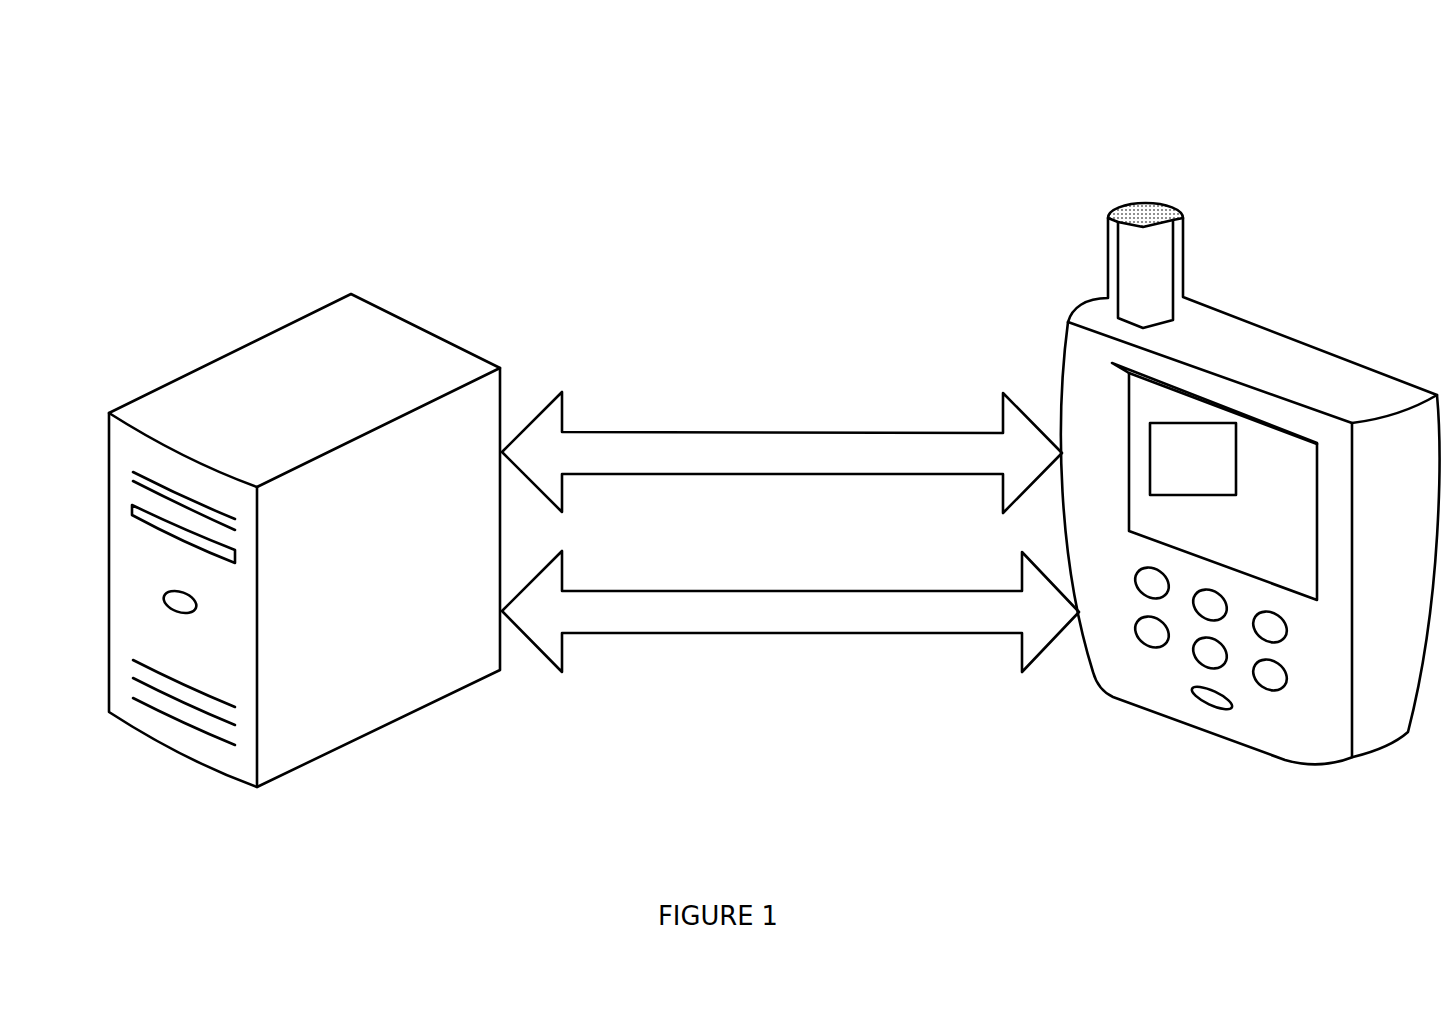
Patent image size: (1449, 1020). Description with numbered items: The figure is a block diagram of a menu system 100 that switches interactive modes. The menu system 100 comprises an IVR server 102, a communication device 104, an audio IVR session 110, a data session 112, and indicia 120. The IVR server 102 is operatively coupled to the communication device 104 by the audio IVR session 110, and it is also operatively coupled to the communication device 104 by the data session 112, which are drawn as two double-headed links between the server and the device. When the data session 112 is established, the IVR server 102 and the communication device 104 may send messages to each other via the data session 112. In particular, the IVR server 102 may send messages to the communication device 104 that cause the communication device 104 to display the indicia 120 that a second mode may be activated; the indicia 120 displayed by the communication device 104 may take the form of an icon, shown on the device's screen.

The menu system 100 is at (673, 77).
The IVR server 102 is at (362, 299).
The communication device 104 is at (1250, 483).
The audio IVR session 110 is at (695, 432).
The data session 112 is at (695, 592).
The indicia 120 is at (1200, 497).